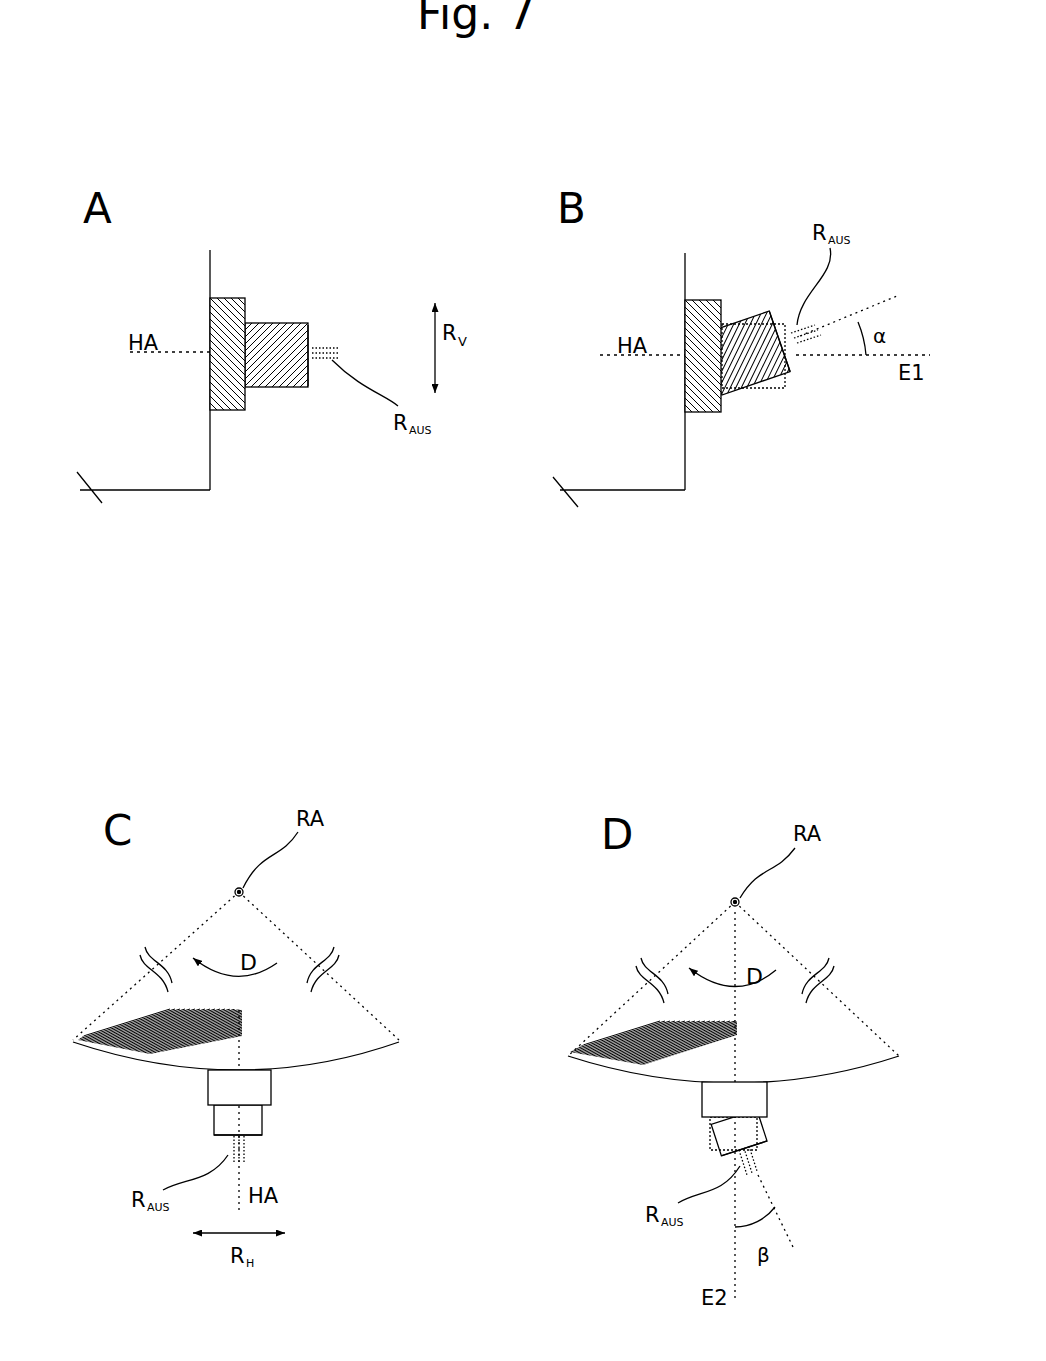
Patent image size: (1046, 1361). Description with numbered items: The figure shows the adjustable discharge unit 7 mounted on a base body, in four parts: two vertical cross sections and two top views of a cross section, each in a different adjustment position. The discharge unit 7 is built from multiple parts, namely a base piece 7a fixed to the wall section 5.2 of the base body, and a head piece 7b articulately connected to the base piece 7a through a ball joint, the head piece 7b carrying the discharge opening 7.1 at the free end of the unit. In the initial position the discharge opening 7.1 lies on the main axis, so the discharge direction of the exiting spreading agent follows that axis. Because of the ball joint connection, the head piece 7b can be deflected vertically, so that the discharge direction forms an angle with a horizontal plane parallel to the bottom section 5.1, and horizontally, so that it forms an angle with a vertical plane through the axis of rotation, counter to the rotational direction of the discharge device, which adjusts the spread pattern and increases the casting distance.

The bottom section 5.1 is at (160, 488).
The wall section 5.2 is at (210, 283).
The discharge unit 7 is at (493, 673).
The base piece 7a is at (225, 412).
The head piece 7b is at (258, 318).
The discharge opening 7.1 is at (310, 362).